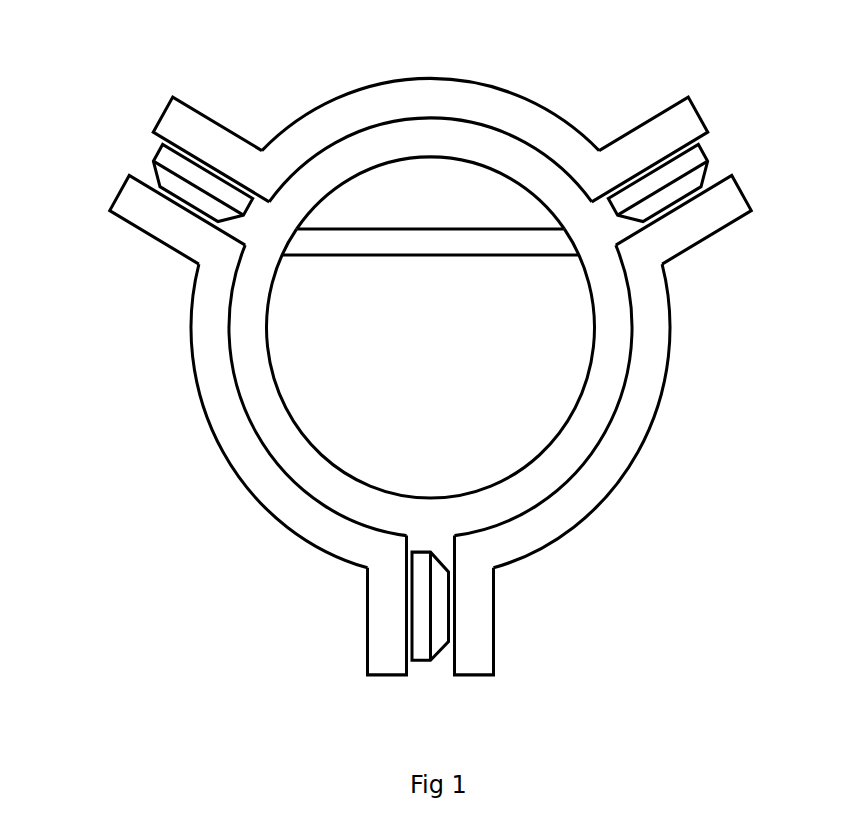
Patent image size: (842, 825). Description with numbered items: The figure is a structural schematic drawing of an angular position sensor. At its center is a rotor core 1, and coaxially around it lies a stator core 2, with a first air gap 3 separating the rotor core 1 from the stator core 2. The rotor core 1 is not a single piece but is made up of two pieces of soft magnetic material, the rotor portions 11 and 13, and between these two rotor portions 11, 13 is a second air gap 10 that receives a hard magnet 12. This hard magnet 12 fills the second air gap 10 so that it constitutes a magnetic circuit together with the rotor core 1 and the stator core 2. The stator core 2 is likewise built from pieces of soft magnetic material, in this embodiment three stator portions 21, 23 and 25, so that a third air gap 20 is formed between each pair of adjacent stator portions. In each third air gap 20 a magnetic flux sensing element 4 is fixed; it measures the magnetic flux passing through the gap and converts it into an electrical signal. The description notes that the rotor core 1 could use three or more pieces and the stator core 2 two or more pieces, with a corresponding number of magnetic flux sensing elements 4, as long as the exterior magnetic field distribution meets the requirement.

The rotor core 1 is at (260, 305).
The stator core 2 is at (188, 357).
The first air gap 3 is at (258, 385).
The magnetic flux sensing element 4 is at (172, 165).
The second air gap 10 is at (435, 228).
The rotor portion 11 is at (392, 200).
The hard magnet 12 is at (508, 244).
The rotor portion 13 is at (563, 332).
The third air gap 20 is at (142, 173).
The stator portion 21 is at (400, 103).
The stator portion 23 is at (242, 437).
The stator portion 25 is at (605, 465).